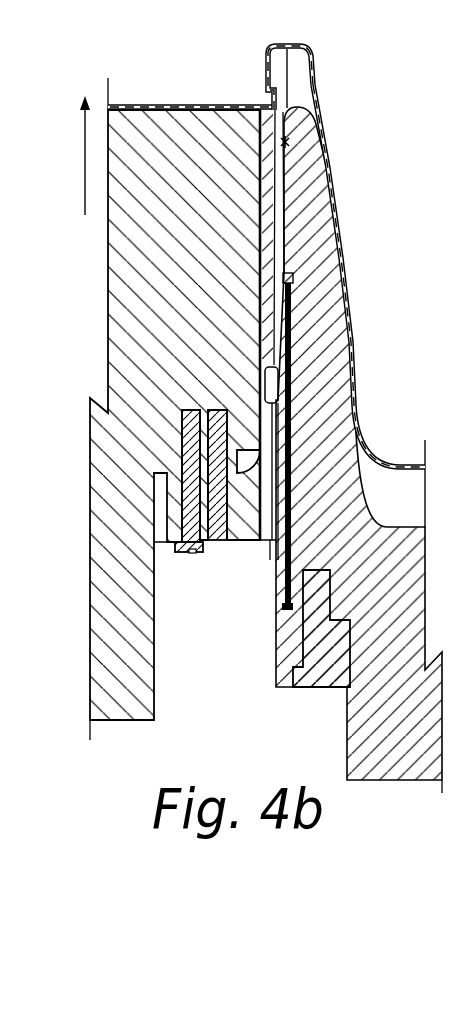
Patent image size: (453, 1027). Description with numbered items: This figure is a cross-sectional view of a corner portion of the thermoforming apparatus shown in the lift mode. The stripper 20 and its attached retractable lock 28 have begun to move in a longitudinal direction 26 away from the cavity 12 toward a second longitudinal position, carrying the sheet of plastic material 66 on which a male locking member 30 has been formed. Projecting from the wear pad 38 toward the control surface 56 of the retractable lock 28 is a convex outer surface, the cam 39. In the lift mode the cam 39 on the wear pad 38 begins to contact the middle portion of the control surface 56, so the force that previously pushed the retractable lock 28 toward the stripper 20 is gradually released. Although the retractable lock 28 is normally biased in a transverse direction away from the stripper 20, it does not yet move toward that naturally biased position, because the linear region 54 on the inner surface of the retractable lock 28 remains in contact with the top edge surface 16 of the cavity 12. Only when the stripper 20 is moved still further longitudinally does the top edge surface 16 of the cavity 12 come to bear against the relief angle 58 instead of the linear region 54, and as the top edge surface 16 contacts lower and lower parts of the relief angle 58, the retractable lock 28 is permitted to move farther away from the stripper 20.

The cavity 12 is at (352, 450).
The top edge surface of the cavity 16 is at (316, 94).
The stripper 20 is at (175, 409).
The longitudinal direction 26 is at (85, 170).
The retractable lock 28 is at (254, 546).
The male locking member 30 is at (266, 56).
The wear pad 38 is at (286, 338).
The cam 39 is at (296, 276).
The linear region 54 is at (296, 70).
The control surface 56 is at (292, 364).
The relief angle 58 is at (284, 142).
The sheet of plastic material 66 is at (158, 104).